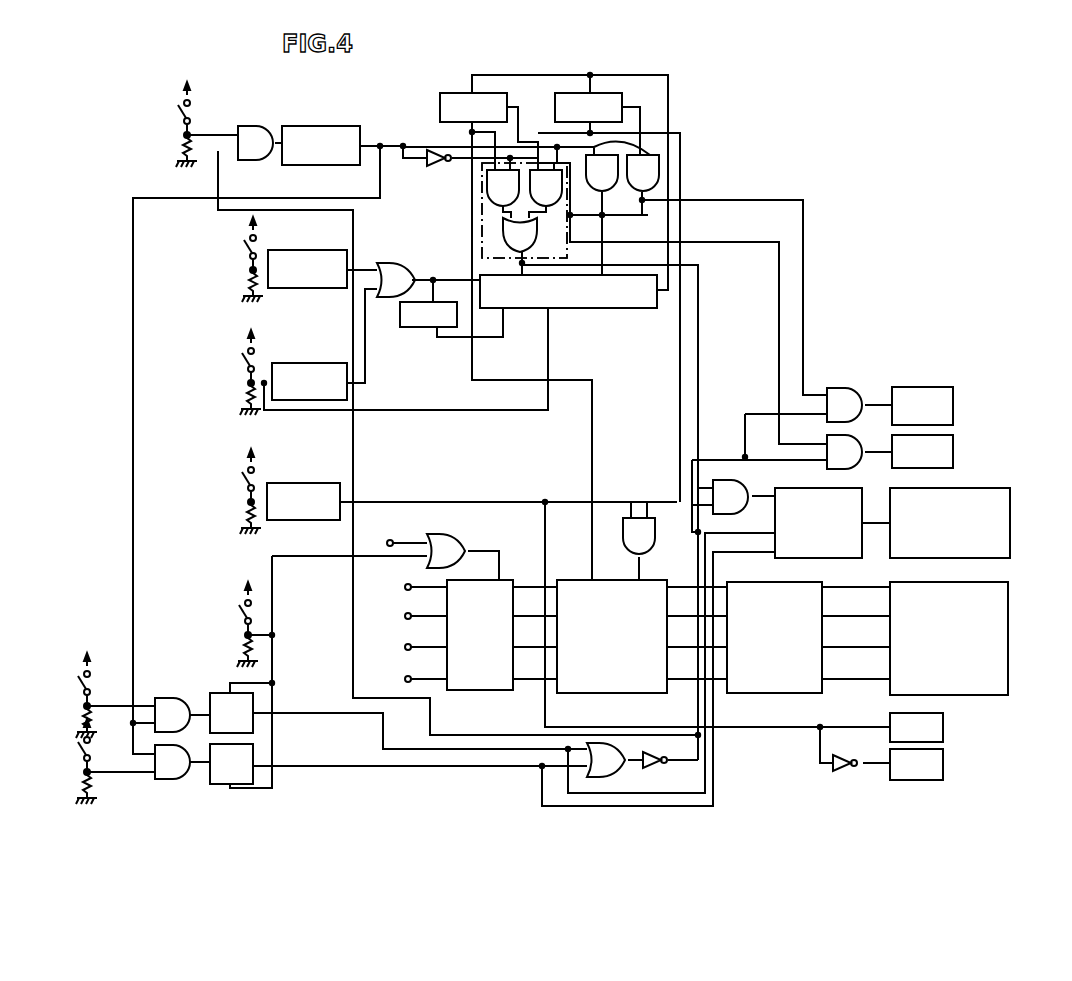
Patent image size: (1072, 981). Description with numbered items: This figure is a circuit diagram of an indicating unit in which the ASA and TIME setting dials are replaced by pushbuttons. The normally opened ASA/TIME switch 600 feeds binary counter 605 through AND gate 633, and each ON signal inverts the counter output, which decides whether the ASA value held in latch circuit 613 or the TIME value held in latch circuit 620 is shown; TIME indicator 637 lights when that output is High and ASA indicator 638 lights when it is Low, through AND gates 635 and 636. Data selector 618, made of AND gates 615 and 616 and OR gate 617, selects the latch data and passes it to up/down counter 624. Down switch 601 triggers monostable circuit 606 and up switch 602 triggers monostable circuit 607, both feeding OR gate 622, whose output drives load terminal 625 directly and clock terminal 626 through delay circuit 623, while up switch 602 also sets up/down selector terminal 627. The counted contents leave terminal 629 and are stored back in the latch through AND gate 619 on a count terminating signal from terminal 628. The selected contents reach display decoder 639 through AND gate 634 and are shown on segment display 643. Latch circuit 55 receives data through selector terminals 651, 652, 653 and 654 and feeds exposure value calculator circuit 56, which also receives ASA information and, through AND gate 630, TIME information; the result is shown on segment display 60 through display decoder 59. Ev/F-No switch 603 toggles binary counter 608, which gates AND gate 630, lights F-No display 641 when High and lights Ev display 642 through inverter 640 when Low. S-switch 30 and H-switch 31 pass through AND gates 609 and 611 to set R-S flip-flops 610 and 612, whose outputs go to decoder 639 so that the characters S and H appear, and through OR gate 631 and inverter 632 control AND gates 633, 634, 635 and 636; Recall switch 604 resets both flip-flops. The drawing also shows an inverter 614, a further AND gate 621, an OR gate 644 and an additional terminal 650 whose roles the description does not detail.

The S-switch 30 is at (83, 684).
The H-switch 31 is at (83, 780).
The latch circuit 55 is at (512, 580).
The exposure value calculator circuit 56 is at (572, 580).
The display decoder 59 is at (810, 680).
The segment display 60 is at (1008, 600).
The ASA/TIME switch 600 is at (183, 119).
The down switch 601 is at (249, 250).
The up switch 602 is at (247, 366).
The Ev/F-No switch 603 is at (247, 475).
The Recall switch 604 is at (243, 612).
The binary counter 605 is at (330, 126).
The monostable circuit 606 is at (305, 244).
The monostable circuit 607 is at (303, 363).
The binary counter 608 is at (300, 483).
The AND gate 609 is at (172, 698).
The R-S flip-flop 610 is at (212, 693).
The AND gate 611 is at (172, 767).
The R-S flip-flop 612 is at (208, 782).
The latch circuit 613 is at (445, 93).
The inverter 614 is at (430, 166).
The AND gate 615 is at (493, 186).
The AND gate 616 is at (540, 190).
The OR gate 617 is at (505, 238).
The data selector 618 is at (472, 222).
The AND gate 619 is at (700, 150).
The latch circuit 620 is at (555, 108).
The AND gate 621 is at (652, 185).
The OR gate 622 is at (388, 298).
The delay circuit 623 is at (400, 315).
The up/down counter 624 is at (657, 302).
The load terminal 625 is at (470, 285).
The clock terminal 626 is at (507, 315).
The up/down selector terminal 627 is at (550, 308).
The terminal 628 is at (609, 275).
The terminal 629 is at (628, 308).
The AND gate 630 is at (640, 518).
The OR gate 631 is at (605, 760).
The inverter 632 is at (656, 765).
The AND gate 633 is at (258, 120).
The AND gate 634 is at (728, 494).
The AND gate 635 is at (852, 393).
The AND gate 636 is at (835, 437).
The TIME indicator 637 is at (925, 387).
The ASA indicator 638 is at (953, 442).
The display decoder 639 is at (862, 507).
The inverter 640 is at (835, 770).
The F-No display 641 is at (943, 718).
The Ev display 642 is at (943, 762).
The segment display 643 is at (970, 488).
The OR gate 644 is at (470, 535).
The input terminal 650 is at (387, 542).
The selector terminal 651 is at (405, 587).
The selector terminal 652 is at (405, 616).
The selector terminal 653 is at (405, 647).
The selector terminal 654 is at (405, 679).